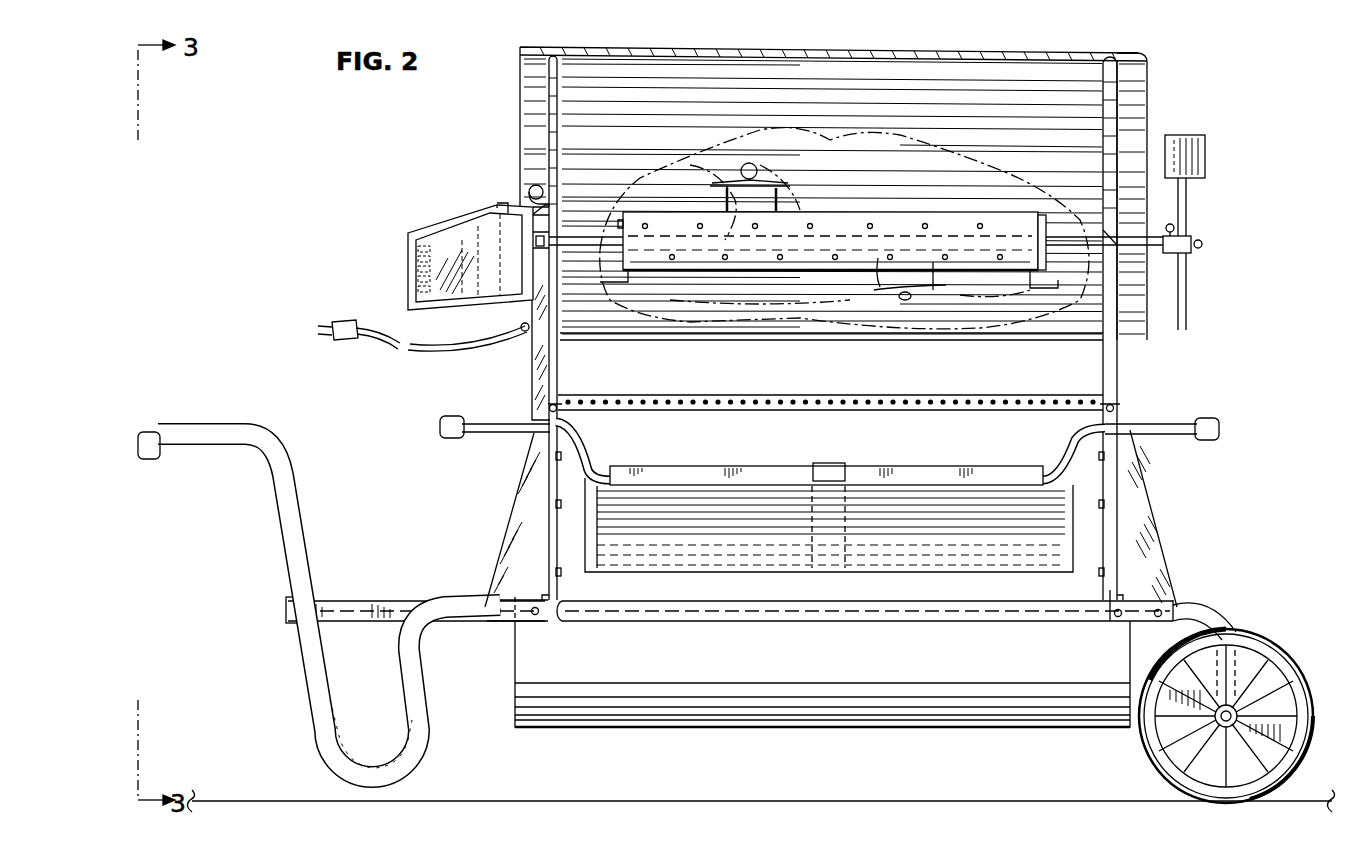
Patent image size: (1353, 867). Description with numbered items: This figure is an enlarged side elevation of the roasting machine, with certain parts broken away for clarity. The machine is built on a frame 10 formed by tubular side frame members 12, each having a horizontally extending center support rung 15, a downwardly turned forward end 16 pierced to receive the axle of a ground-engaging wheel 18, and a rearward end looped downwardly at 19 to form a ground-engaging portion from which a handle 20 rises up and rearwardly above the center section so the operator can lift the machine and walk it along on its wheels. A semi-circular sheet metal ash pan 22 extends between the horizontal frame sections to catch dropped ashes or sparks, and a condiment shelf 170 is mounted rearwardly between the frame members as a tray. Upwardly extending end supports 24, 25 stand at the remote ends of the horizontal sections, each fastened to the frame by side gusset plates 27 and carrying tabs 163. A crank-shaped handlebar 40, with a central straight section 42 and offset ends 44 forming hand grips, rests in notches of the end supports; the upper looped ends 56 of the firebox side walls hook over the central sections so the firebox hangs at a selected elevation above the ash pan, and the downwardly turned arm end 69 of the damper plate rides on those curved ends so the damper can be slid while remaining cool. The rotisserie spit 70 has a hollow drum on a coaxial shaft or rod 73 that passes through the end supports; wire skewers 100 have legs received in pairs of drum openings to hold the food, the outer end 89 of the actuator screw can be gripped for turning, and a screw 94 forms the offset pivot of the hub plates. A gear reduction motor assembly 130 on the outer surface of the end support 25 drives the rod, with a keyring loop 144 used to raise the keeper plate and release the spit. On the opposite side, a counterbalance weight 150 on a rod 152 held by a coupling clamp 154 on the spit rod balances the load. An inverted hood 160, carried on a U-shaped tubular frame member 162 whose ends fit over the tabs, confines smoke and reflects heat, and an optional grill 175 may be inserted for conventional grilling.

The frame 10 is at (295, 670).
The tubular side frame member 12 is at (1003, 625).
The center support rung 15 is at (876, 632).
The downwardly turned forward end 16 is at (1252, 676).
The ground-engaging wheel 18 is at (1244, 632).
The looped rearward end 19 is at (330, 773).
The handle 20 is at (250, 448).
The ash pan 22 is at (745, 728).
The end support 24 is at (1142, 351).
The end support 25 is at (522, 377).
The side gusset plate 27 is at (1140, 547).
The handlebar 40 is at (580, 434).
The central straight section 42 is at (982, 520).
The offset end 44 is at (500, 433).
The upper looped end 56 is at (680, 470).
The downwardly turned arm end 69 is at (832, 466).
The rotisserie spit 70 is at (1013, 208).
The shaft or rod 73 is at (598, 236).
The outer end of actuator screw 89 is at (612, 283).
The screw 94 is at (1040, 232).
The wire skewer 100 is at (802, 166).
The gear reduction motor assembly 130 is at (435, 220).
The keyring loop 144 is at (532, 188).
The counterbalance weight 150 is at (1196, 136).
The rod 152 is at (1190, 305).
The coupling clamp 154 is at (1196, 240).
The hood or shield 160 is at (1120, 52).
The U-shaped tubular frame member 162 is at (1120, 88).
The tab 163 is at (545, 408).
The condiment shelf 170 is at (371, 601).
The grill 175 is at (912, 384).